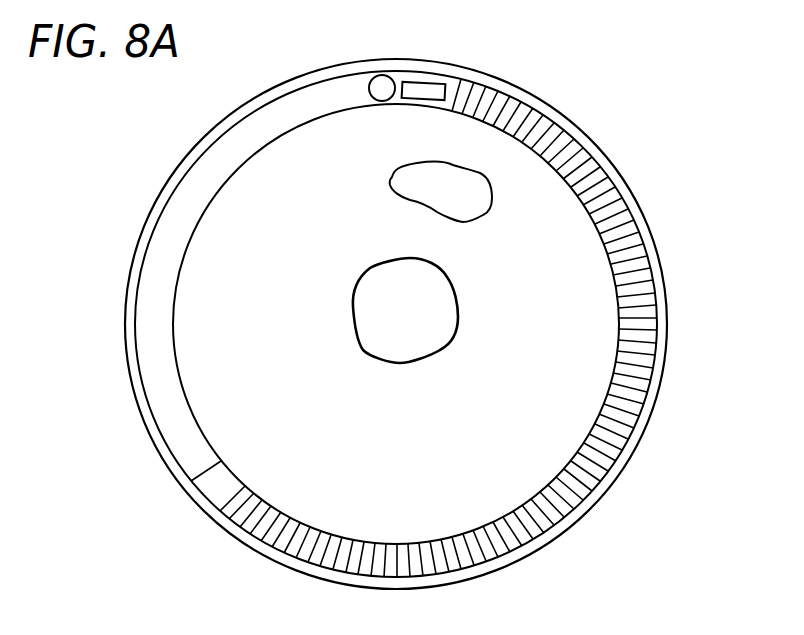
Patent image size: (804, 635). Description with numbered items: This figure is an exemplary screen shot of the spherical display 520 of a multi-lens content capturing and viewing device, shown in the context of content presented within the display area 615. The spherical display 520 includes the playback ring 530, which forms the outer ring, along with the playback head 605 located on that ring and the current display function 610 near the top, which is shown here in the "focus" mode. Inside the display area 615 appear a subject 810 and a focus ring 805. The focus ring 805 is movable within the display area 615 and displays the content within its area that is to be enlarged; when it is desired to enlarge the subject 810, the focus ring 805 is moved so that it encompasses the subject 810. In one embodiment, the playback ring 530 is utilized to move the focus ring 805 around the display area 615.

The spherical display 520 is at (220, 570).
The playback ring 530 is at (218, 162).
The display area 615 is at (292, 160).
The playback head 605 is at (210, 508).
The current display function 610 is at (393, 76).
The subject 810 is at (453, 166).
The focus ring 805 is at (458, 322).